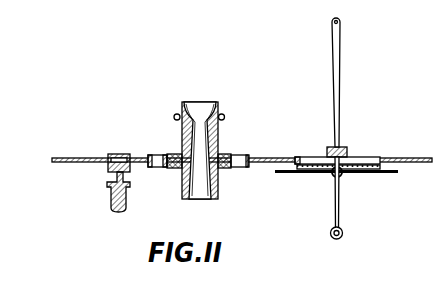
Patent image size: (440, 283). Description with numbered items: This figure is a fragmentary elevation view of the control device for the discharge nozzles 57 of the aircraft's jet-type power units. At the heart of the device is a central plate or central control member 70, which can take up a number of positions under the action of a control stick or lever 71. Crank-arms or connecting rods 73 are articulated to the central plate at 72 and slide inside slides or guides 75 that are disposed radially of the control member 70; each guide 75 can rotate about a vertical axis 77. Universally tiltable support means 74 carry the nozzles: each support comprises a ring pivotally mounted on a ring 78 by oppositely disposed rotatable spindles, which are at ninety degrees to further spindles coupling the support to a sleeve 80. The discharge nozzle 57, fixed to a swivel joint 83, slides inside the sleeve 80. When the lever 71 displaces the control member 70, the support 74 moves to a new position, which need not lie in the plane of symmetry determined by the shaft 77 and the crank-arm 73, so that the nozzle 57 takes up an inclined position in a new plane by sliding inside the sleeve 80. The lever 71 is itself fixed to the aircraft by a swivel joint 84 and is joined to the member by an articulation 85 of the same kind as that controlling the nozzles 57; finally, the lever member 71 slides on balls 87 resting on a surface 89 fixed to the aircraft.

The discharge nozzle 57 is at (183, 110).
The central control member 70 is at (365, 157).
The control lever 71 is at (340, 60).
The articulation 72 is at (298, 157).
The crank-arm 73 is at (264, 158).
The universally tiltable support means 74 is at (247, 171).
The guide 75 is at (121, 150).
The vertical axis 77 is at (115, 174).
The ring 78 is at (245, 155).
The sleeve 80 is at (176, 173).
The swivel joint 83 is at (224, 115).
The swivel joint 84 is at (342, 236).
The articulation 85 is at (341, 148).
The balls 87 is at (313, 174).
The surface 89 is at (362, 171).